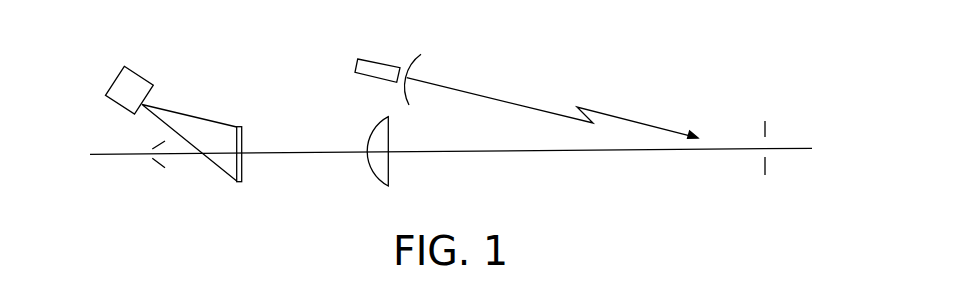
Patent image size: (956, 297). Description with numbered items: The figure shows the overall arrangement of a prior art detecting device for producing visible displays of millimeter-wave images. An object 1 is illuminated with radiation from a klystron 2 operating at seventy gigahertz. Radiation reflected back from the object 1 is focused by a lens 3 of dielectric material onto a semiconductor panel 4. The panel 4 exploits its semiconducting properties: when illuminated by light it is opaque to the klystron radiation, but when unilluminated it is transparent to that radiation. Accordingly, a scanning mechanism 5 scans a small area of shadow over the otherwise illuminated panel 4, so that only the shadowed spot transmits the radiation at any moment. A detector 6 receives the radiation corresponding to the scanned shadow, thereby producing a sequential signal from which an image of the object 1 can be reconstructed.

The object 1 is at (765, 128).
The klystron 2 is at (370, 59).
The lens 3 is at (375, 180).
The semiconductor panel 4 is at (242, 132).
The scanning mechanism 5 is at (135, 67).
The detector 6 is at (159, 163).